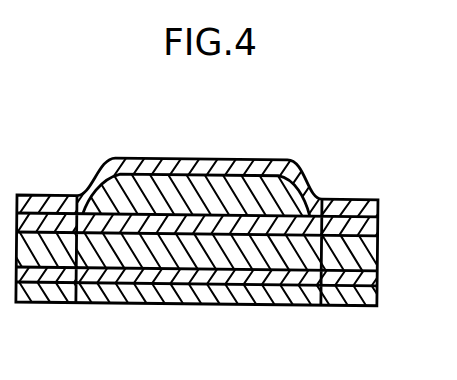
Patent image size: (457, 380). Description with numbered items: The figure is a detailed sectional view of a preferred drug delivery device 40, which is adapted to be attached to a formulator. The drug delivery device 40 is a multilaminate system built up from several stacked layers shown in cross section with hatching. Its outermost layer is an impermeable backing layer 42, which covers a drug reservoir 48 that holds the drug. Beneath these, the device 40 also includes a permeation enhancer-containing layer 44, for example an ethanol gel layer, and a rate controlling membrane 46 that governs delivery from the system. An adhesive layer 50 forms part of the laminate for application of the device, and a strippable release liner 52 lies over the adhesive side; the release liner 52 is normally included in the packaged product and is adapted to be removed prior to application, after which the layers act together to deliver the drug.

The drug delivery device 40 is at (149, 143).
The impermeable backing layer 42 is at (275, 157).
The permeation enhancer-containing layer 44 is at (360, 257).
The rate controlling membrane 46 is at (363, 228).
The drug reservoir 48 is at (236, 188).
The adhesive layer 50 is at (382, 281).
The strippable release liner 52 is at (282, 295).